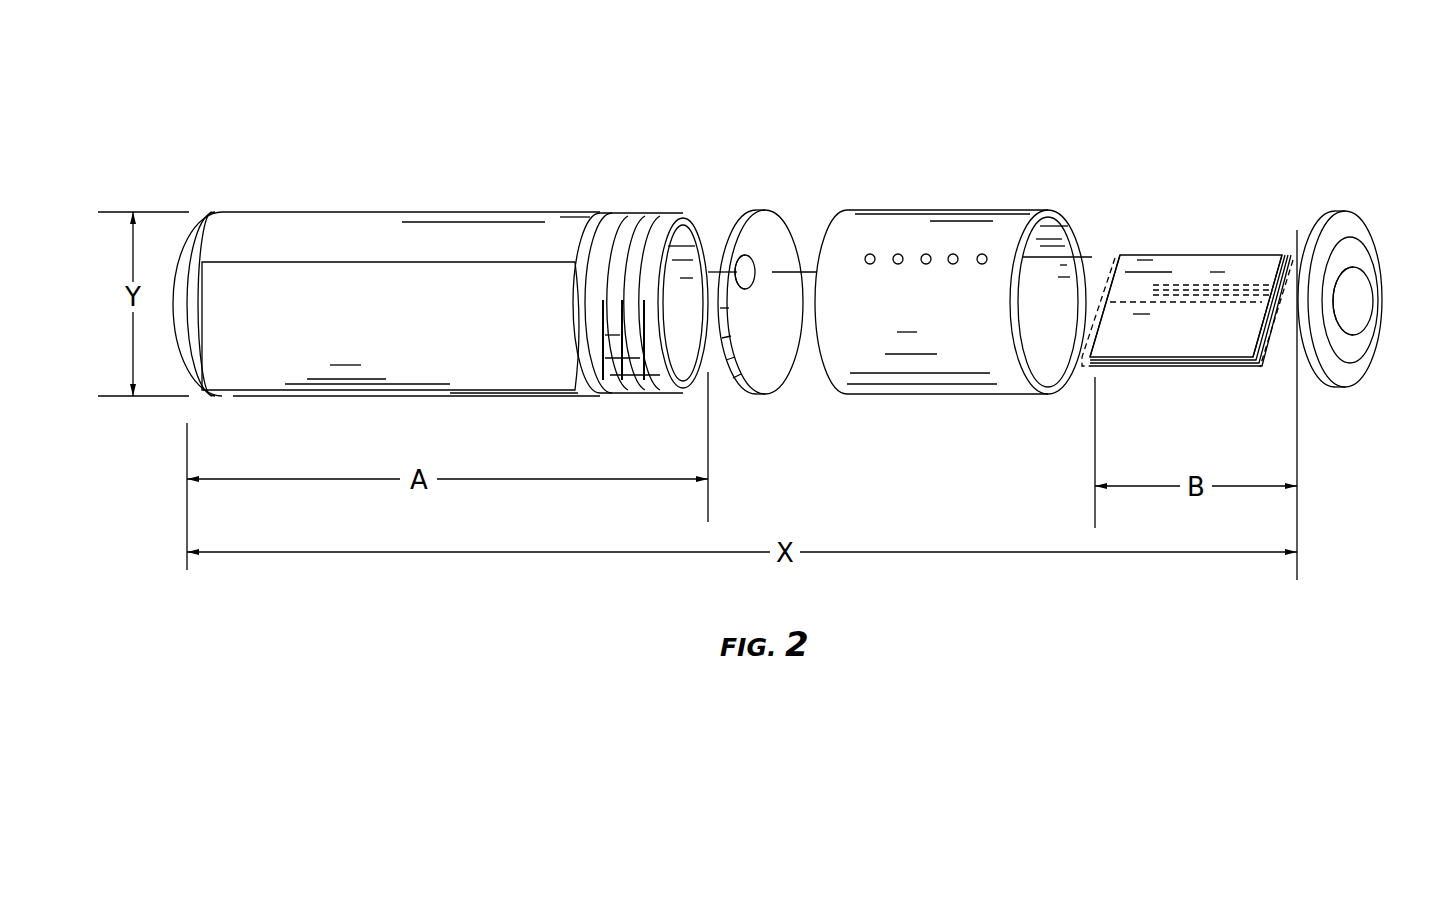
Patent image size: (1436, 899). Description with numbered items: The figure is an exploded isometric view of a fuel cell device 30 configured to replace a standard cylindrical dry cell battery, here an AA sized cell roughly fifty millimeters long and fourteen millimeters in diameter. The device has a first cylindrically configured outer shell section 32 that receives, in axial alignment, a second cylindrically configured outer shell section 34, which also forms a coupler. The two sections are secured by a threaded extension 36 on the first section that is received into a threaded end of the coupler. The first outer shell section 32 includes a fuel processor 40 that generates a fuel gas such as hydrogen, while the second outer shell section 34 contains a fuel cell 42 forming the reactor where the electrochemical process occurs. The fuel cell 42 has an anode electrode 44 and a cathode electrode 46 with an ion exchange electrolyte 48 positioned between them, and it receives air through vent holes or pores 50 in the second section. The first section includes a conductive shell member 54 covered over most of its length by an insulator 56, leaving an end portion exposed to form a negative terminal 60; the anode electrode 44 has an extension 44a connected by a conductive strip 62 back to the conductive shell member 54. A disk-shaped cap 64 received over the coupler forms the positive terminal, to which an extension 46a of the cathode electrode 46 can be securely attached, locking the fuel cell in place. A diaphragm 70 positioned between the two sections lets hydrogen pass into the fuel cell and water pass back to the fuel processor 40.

The fuel cell device 30 is at (760, 131).
The first cylindrically configured outer shell section 32 is at (316, 199).
The second cylindrically configured outer shell section 34 is at (990, 207).
The threaded extension 36 is at (641, 224).
The fuel processor 40 is at (703, 236).
The fuel cell 42 is at (1186, 254).
The anode electrode 44 is at (1135, 255).
The extension 44a is at (1112, 266).
The cathode electrode 46 is at (1118, 368).
The extension 46a is at (1297, 230).
The ion exchange electrolyte 48 is at (1193, 368).
The vent holes or pores 50 is at (870, 254).
The conductive shell member 54 is at (383, 236).
The insulator 56 is at (470, 398).
The negative terminal 60 is at (223, 212).
The conductive strip 62 is at (1090, 253).
The disk-shaped cap 64 is at (1340, 232).
The diaphragm 70 is at (773, 210).